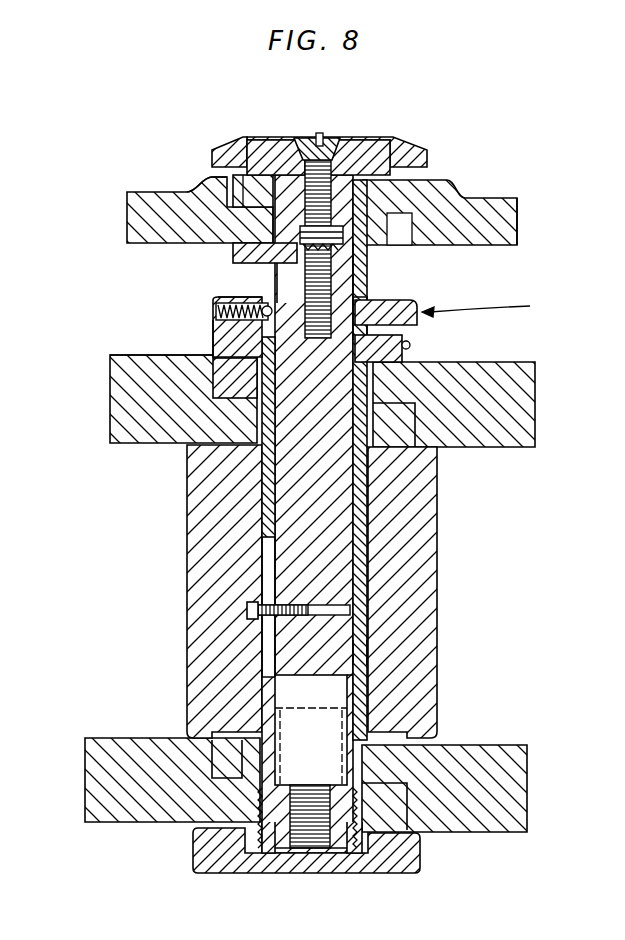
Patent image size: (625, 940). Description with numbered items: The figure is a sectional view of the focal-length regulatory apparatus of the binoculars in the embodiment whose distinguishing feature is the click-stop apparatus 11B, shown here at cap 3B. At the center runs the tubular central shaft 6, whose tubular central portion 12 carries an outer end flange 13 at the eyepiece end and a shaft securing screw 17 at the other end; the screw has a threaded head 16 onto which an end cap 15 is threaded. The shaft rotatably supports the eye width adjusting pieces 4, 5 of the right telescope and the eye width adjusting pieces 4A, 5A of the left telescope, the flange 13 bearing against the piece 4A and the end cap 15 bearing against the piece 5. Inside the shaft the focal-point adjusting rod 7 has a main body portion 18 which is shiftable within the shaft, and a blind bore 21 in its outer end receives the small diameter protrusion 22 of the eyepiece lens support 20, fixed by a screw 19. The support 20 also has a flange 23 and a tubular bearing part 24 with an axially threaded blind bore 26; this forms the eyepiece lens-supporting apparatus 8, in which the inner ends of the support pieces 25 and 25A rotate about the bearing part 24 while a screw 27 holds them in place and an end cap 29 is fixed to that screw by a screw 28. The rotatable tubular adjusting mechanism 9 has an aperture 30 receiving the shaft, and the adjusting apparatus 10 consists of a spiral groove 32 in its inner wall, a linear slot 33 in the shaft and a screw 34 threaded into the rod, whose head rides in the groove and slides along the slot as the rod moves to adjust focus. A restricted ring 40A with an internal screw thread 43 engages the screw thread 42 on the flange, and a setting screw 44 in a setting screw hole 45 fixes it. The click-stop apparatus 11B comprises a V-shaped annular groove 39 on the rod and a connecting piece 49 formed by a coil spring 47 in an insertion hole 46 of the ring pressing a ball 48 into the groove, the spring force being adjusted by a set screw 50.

The cap 3B is at (368, 136).
The eye width adjusting piece 4 is at (110, 405).
The eye width adjusting piece 4A is at (532, 405).
The eye width adjusting piece 5 is at (92, 778).
The eye width adjusting piece 5A is at (522, 786).
The tubular central shaft 6 is at (358, 542).
The focal-point adjusting rod 7 is at (332, 511).
The eyepiece lens-supporting apparatus 8 is at (468, 197).
The rotatable tubular adjusting mechanism 9 is at (440, 578).
The adjusting apparatus 10 is at (250, 609).
The click-stop apparatus 11B is at (499, 303).
The tubular central portion 12 is at (360, 652).
The outer end flange 13 is at (395, 355).
The end cap 15 is at (292, 873).
The threaded head 16 is at (258, 842).
The shaft securing screw 17 is at (345, 838).
The main body portion 18 is at (238, 494).
The screw 19 is at (365, 180).
The eyepiece lens support 20 is at (225, 225).
The blind bore 21 is at (358, 279).
The small diameter protrusion 22 is at (290, 276).
The flange 23 is at (240, 251).
The tubular bearing part 24 is at (243, 200).
The support piece 25 is at (130, 218).
The support piece 25A is at (520, 226).
The axially threaded blind bore 26 is at (322, 160).
The screw 27 is at (283, 160).
The screw 28 is at (306, 140).
The end cap 29 is at (233, 150).
The aperture 30 is at (355, 673).
The spiral groove 32 is at (255, 606).
The linear slot 33 is at (264, 547).
The screw 34 is at (250, 616).
The annular groove 39 is at (360, 300).
The restricted ring 40A is at (420, 306).
The screw thread 42 is at (212, 355).
The screw thread 43 is at (223, 342).
The setting screw 44 is at (406, 353).
The setting screw hole 45 is at (410, 344).
The insertion hole 46 is at (215, 303).
The coil spring 47 is at (112, 365).
The ball 48 is at (262, 308).
The connecting piece 49 is at (222, 330).
The set screw 50 is at (216, 312).